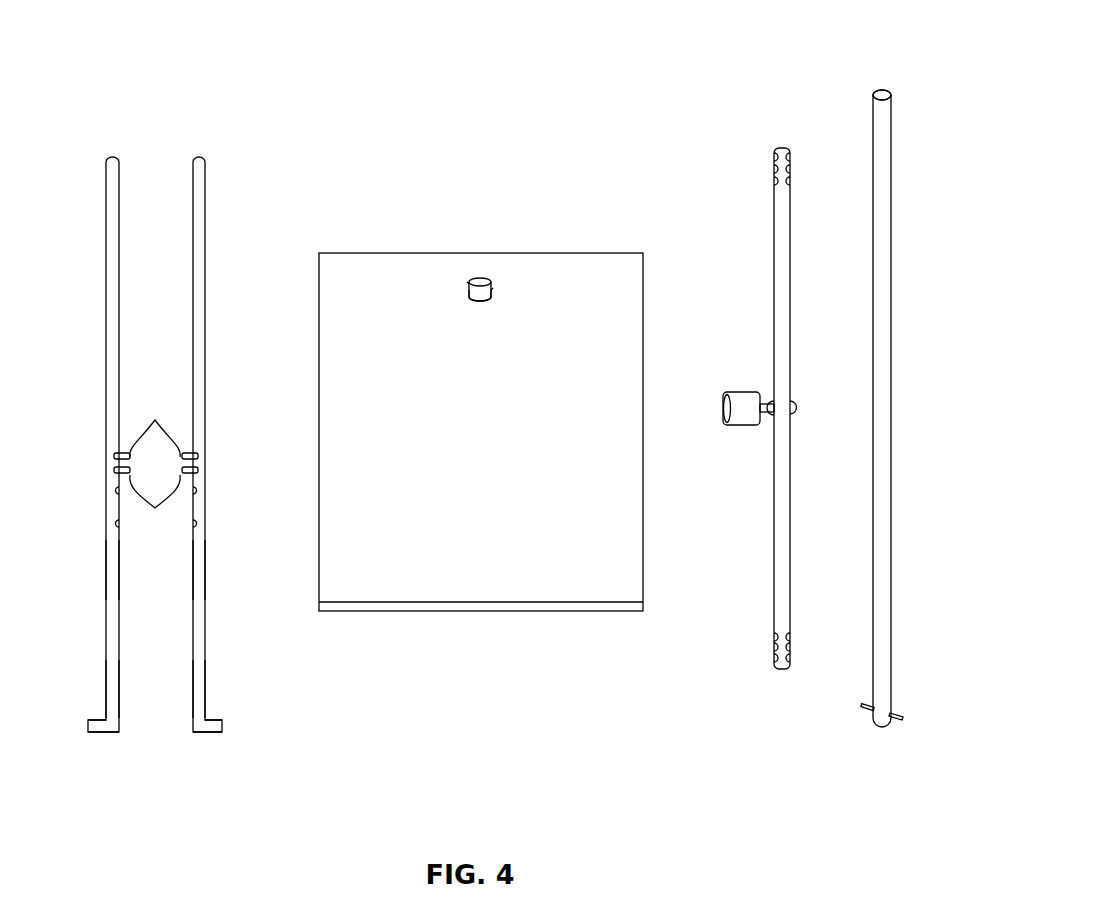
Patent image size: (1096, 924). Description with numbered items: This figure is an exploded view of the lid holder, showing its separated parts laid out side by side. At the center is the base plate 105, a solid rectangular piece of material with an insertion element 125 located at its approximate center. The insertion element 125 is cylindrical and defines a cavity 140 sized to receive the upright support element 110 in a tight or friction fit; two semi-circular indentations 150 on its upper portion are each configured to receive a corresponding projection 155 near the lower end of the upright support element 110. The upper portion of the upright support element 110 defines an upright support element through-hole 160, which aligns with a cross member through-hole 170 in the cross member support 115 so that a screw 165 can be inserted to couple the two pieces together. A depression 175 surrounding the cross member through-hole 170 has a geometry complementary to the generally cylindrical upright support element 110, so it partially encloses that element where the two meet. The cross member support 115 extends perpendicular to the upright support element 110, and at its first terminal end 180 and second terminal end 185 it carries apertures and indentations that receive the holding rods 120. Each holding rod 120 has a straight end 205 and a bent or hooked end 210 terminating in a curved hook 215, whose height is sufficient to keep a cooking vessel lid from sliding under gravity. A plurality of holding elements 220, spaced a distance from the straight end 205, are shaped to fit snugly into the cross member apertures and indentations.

The base plate 105 is at (617, 362).
The upright support element 110 is at (880, 140).
The cross member support 115 is at (780, 249).
The holding rod 120 is at (113, 583).
The insertion element 125 is at (484, 278).
The cavity 140 is at (471, 300).
The indentation 150 is at (462, 282).
The projection 155 is at (872, 705).
The upright support element through-hole 160 is at (871, 98).
The screw 165 is at (742, 427).
The cross member through-hole 170 is at (779, 395).
The depression 175 is at (780, 415).
The first terminal end 180 is at (782, 670).
The second terminal end 185 is at (785, 148).
The straight end 205 is at (113, 176).
The bent or hooked end 210 is at (112, 697).
The hook 215 is at (101, 734).
The holding element 220 is at (155, 420).